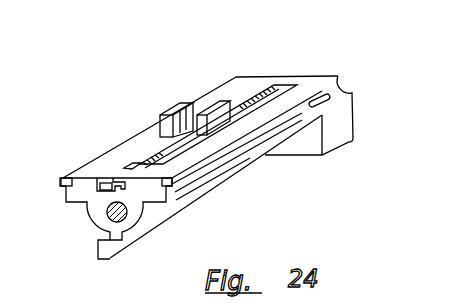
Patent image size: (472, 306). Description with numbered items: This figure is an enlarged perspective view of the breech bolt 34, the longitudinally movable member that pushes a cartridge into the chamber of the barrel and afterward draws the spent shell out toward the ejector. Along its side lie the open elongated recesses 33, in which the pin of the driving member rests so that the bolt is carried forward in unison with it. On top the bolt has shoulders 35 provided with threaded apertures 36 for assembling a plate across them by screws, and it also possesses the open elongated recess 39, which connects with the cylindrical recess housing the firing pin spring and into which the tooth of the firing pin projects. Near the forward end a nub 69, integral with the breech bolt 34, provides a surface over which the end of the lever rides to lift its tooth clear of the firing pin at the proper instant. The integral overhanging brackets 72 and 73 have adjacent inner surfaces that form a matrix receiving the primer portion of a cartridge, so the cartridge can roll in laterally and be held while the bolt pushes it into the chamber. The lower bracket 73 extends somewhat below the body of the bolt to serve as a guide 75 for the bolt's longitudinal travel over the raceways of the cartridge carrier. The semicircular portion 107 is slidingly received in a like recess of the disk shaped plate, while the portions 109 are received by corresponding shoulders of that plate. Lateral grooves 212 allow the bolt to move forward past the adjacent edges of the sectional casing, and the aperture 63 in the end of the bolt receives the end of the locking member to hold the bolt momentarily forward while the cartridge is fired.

The portions of the breech bolt 109 is at (78, 195).
The lateral grooves 212 is at (65, 185).
The guide 75 is at (216, 186).
The breech bolt 34 is at (272, 136).
The semicircular portion of the breech bolt 107 is at (250, 166).
The aperture 63 is at (347, 86).
The open elongated recesses 33 is at (324, 102).
The open elongated recess 39 is at (277, 85).
The shoulders 35 is at (204, 112).
The threaded apertures 36 is at (212, 100).
The nub 69 is at (130, 162).
The overhanging bracket 72 is at (106, 177).
The lower bracket 73 is at (97, 253).